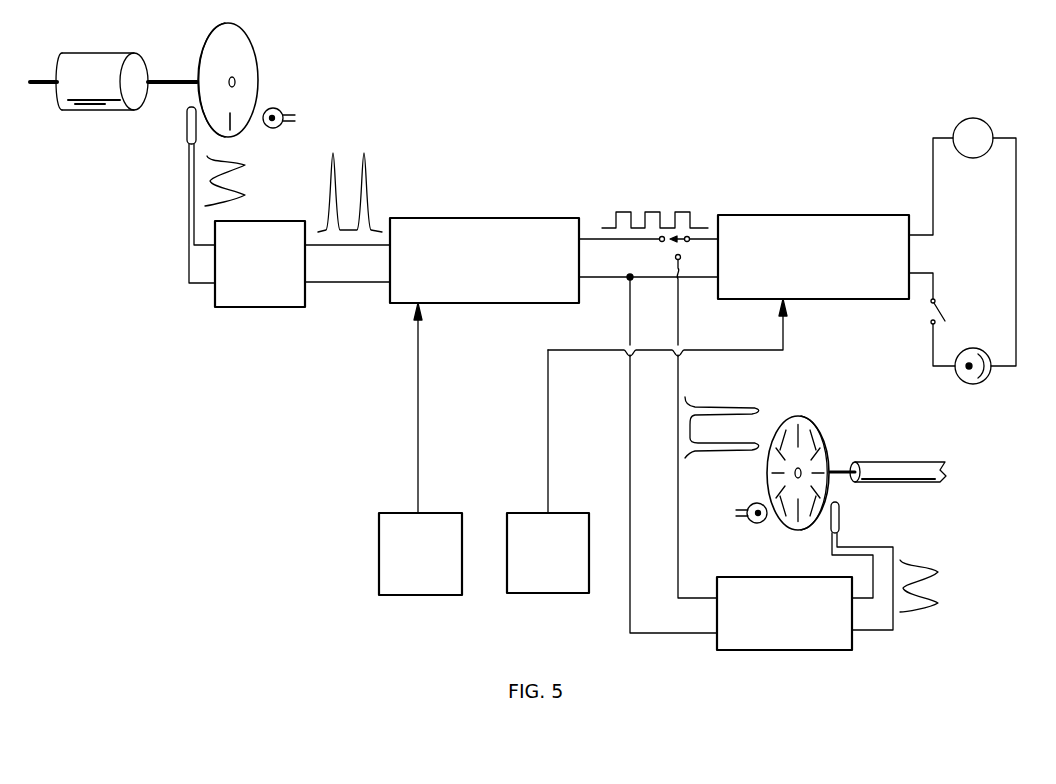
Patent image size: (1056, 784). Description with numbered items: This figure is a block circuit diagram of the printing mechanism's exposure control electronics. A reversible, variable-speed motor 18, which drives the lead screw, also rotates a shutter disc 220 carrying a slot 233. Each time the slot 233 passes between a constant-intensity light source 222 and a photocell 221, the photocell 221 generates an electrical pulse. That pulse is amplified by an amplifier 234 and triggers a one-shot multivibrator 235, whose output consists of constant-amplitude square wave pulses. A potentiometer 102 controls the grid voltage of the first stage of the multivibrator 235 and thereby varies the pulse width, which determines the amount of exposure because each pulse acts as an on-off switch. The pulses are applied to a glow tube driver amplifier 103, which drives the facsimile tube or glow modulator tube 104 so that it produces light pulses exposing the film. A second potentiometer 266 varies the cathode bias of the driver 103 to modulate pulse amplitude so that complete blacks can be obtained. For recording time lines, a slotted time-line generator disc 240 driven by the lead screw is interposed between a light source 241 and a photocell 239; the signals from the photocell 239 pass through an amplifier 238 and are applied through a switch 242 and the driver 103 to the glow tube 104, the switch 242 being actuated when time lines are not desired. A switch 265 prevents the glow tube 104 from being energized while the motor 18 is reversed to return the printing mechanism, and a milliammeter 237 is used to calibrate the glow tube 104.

The motor 18 is at (105, 53).
The shutter disc 220 is at (250, 50).
The slot 233 is at (230, 130).
The constant-intensity light source 222 is at (278, 109).
The photocell 221 is at (186, 126).
The amplifier 234 is at (250, 222).
The one-shot multivibrator 235 is at (504, 218).
The switch 242 is at (668, 247).
The glow tube driver amplifier 103 is at (840, 215).
The milliammeter 237 is at (984, 121).
The switch 265 is at (929, 313).
The facsimile tube 104 is at (988, 377).
The slotted time-line generator disc 240 is at (820, 430).
The light source 241 is at (752, 504).
The photocell 239 is at (841, 517).
The amplifier 238 is at (740, 577).
The potentiometer 102 is at (430, 513).
The potentiometer 266 is at (557, 513).